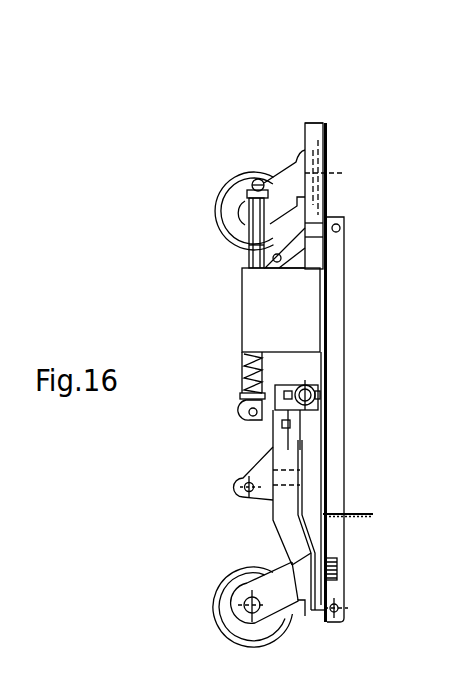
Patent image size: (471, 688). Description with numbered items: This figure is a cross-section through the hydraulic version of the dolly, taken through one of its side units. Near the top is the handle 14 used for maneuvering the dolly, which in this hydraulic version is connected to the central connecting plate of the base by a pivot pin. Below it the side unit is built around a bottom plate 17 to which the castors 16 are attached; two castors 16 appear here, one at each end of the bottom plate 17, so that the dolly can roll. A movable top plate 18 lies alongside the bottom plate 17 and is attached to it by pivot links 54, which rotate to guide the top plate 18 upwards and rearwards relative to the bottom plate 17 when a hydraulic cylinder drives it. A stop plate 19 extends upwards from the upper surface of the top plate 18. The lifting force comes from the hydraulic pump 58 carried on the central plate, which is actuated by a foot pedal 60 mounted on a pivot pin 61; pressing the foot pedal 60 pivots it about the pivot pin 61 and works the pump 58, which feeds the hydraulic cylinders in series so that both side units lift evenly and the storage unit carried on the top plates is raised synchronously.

The handle 14 is at (348, 300).
The castor 16 is at (209, 213).
The bottom plate 17 is at (233, 104).
The top plate 18 is at (332, 150).
The stop plate 19 is at (372, 491).
The pivot link 54 is at (234, 516).
The hydraulic pump 58 is at (237, 328).
The foot pedal 60 is at (322, 588).
The pivot pin 61 is at (348, 398).